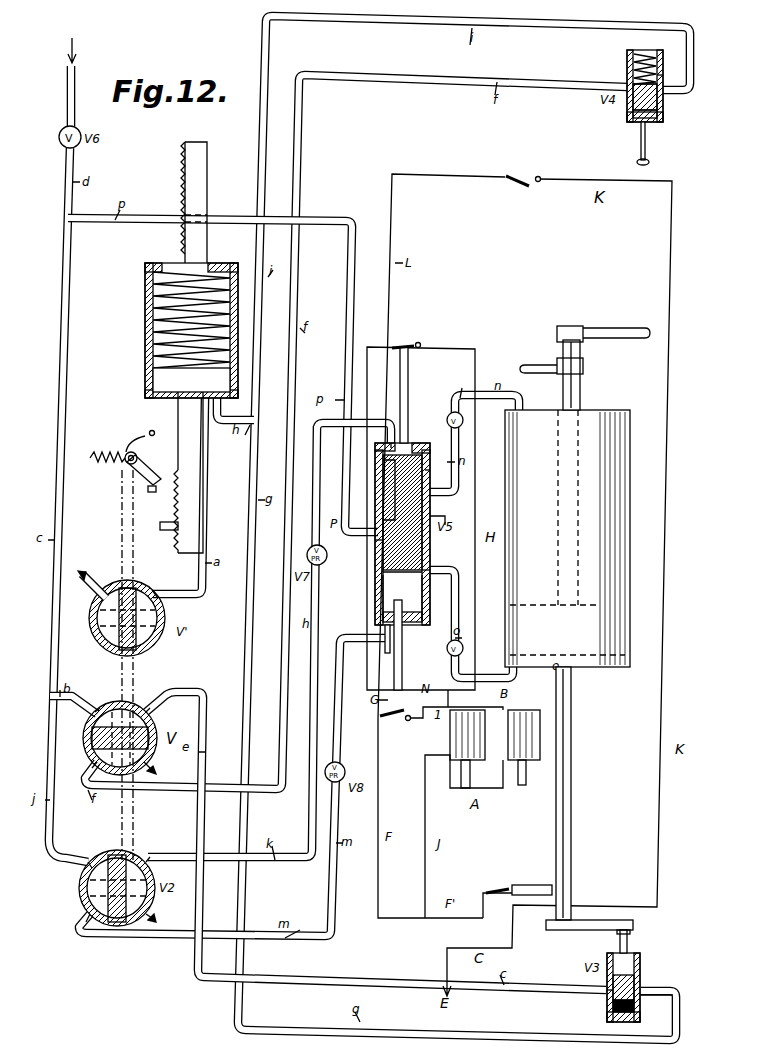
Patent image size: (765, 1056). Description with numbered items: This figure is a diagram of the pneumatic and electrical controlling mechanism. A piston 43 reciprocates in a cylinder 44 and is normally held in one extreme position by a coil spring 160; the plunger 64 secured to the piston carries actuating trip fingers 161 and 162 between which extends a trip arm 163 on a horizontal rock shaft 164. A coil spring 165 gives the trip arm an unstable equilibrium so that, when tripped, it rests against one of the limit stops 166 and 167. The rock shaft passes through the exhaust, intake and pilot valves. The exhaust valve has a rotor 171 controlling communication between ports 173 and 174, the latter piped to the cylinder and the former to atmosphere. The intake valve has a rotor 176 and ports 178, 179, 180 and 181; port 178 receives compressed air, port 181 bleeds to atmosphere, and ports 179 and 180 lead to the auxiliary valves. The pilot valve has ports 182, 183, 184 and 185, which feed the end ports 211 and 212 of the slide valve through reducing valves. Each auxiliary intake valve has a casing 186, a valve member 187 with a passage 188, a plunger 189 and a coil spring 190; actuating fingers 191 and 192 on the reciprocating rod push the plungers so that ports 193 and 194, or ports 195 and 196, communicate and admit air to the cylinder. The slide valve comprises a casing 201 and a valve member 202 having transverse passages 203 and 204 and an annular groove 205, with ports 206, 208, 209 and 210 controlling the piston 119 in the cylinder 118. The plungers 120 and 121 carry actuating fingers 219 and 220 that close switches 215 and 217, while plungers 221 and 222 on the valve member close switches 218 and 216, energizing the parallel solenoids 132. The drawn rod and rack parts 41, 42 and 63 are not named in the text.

The rack teeth on rod 41 is at (183, 172).
The piston rod 42 is at (207, 183).
The piston 43 is at (160, 380).
The cylinder 44 is at (160, 352).
The rack 63 is at (200, 500).
The plunger 64 is at (195, 448).
The cylinder 118 is at (622, 553).
The piston 119 is at (600, 605).
The plunger 120 is at (571, 785).
The plunger 121 is at (580, 396).
The solenoids 132 is at (450, 745).
The coil spring 160 is at (160, 312).
The actuating trip finger 161 is at (166, 530).
The actuating trip finger 162 is at (160, 468).
The trip arm 163 is at (138, 438).
The rock shaft 164 is at (128, 455).
The coil spring 165 is at (100, 466).
The limit stop 166 is at (152, 492).
The limit stop 167 is at (151, 430).
The rotor 171 is at (123, 618).
The port 173 is at (96, 582).
The port 174 is at (159, 585).
The rotor 176 is at (90, 724).
The port 178 is at (100, 706).
The port 179 is at (149, 705).
The port 180 is at (95, 764).
The port 181 is at (163, 766).
The port 182 is at (84, 862).
The port 183 is at (152, 864).
The port 184 is at (84, 914).
The port 185 is at (165, 914).
The casing 186 is at (663, 116).
The valve member 187 is at (662, 80).
The passage 188 is at (633, 114).
The plunger 189 is at (650, 155).
The coil spring 190 is at (643, 52).
The actuating finger 191 is at (592, 930).
The actuating finger 192 is at (615, 330).
The port 193 is at (634, 980).
The port 194 is at (606, 988).
The port 195 is at (657, 90).
The port 196 is at (633, 86).
The casing 201 is at (430, 483).
The valve member 202 is at (422, 545).
The transverse passage 203 is at (420, 443).
The transverse passage 204 is at (425, 580).
The annular groove 205 is at (446, 520).
The port 206 is at (383, 470).
The port 208 is at (386, 582).
The port 209 is at (422, 572).
The port 210 is at (376, 540).
The combined intake and exhaust port 211 is at (391, 440).
The combined intake and exhaust port 212 is at (388, 652).
The switch 215 is at (492, 889).
The switch 216 is at (415, 336).
The switch 217 is at (518, 188).
The switch 218 is at (392, 722).
The actuating finger 219 is at (532, 885).
The actuating finger 220 is at (540, 365).
The plunger 221 is at (403, 668).
The plunger 222 is at (409, 378).